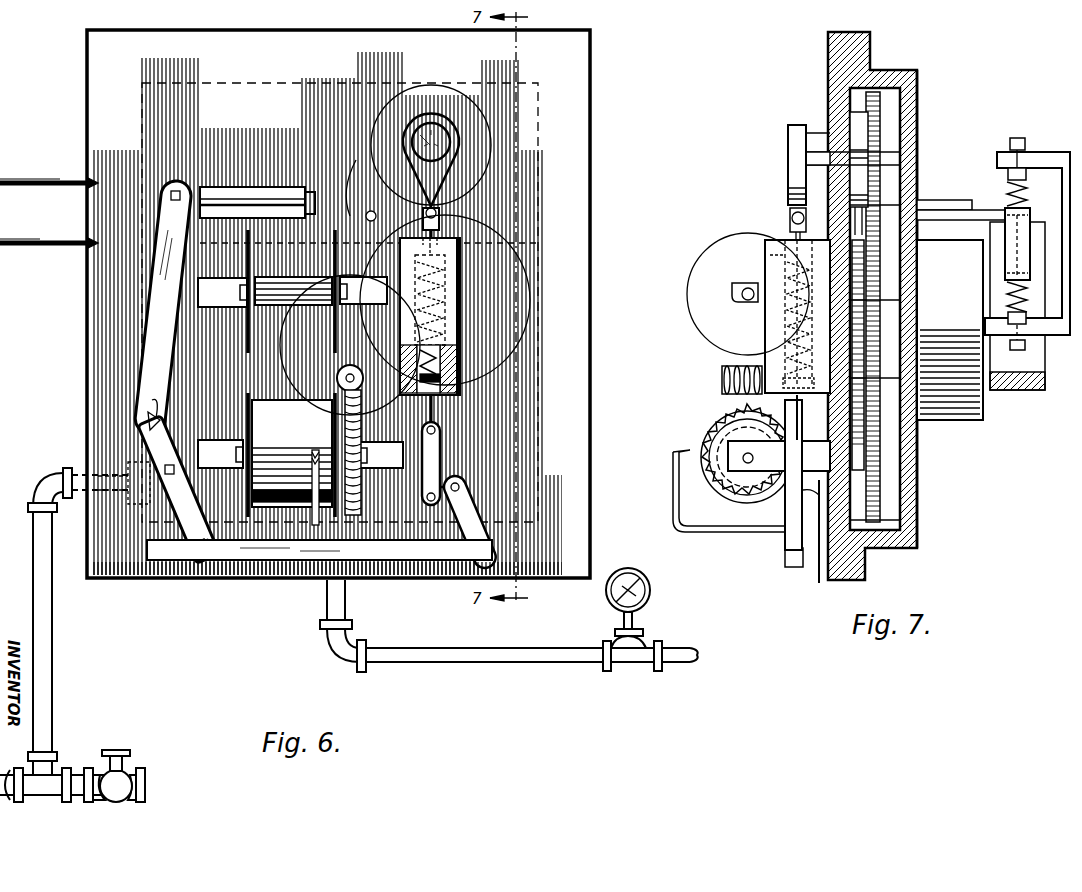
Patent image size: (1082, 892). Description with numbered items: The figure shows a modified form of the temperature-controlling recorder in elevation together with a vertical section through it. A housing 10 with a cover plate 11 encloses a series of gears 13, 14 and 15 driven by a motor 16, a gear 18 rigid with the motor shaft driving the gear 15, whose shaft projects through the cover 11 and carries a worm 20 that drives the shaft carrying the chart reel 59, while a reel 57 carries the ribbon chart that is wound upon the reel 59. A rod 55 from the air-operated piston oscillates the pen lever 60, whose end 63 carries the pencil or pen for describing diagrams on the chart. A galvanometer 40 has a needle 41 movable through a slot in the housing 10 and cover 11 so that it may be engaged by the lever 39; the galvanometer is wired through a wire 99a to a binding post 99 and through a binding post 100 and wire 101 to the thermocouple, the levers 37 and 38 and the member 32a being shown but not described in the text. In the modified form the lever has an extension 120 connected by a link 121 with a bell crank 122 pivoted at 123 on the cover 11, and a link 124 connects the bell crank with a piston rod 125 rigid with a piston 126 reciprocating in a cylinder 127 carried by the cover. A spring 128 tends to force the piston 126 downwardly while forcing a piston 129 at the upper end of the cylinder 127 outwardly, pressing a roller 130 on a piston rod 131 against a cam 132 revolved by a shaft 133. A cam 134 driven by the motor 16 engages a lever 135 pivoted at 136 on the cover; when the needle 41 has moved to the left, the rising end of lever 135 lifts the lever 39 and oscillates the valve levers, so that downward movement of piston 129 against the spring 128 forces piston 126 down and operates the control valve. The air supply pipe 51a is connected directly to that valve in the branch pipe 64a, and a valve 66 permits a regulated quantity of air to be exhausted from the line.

In FIG. 7, the housing 10 is at (918, 110).
In FIG. 6, the cover plate 11 is at (590, 322).
In FIG. 7, the gear 13 is at (882, 390).
In FIG. 7, the gear 14 is at (880, 80).
In FIG. 7, the gear 15 is at (858, 462).
In FIG. 7, the motor 16 is at (950, 420).
In FIG. 7, the gear 18 is at (920, 252).
In FIG. 7, the worm 20 is at (720, 378).
In FIG. 6, the pipe connection 32a is at (140, 462).
In FIG. 6, the lever 37 is at (150, 350).
In FIG. 6, the lever arm 38 is at (162, 522).
In FIG. 6, the lever 39 is at (222, 198).
In FIG. 7, the galvanometer 40 is at (1010, 260).
In FIG. 6, the needle 41 is at (295, 196).
In FIG. 7, the needle 41 is at (928, 202).
In FIG. 6, the air supply pipe 51a is at (475, 660).
In FIG. 6, the rod 55 is at (22, 770).
In FIG. 6, the reel 57 is at (280, 283).
In FIG. 7, the reel 57 is at (700, 330).
In FIG. 6, the reel 59 is at (291, 455).
In FIG. 7, the lever 60 is at (748, 530).
In FIG. 7, the pen end of lever 63 is at (676, 458).
In FIG. 6, the branch pipe 64a is at (45, 662).
In FIG. 6, the valve 66 is at (120, 775).
In FIG. 6, the binding post 99 is at (95, 186).
In FIG. 6, the wire 99a is at (14, 180).
In FIG. 7, the wire 99a is at (1032, 158).
In FIG. 6, the binding post 100 is at (96, 248).
In FIG. 6, the wire 101 is at (20, 246).
In FIG. 7, the wire 101 is at (1025, 322).
In FIG. 6, the extension 120 is at (190, 570).
In FIG. 6, the link 121 is at (278, 568).
In FIG. 7, the link 121 is at (712, 520).
In FIG. 6, the bell crank 122 is at (475, 512).
In FIG. 7, the bell crank 122 is at (819, 583).
In FIG. 6, the pivot 123 is at (455, 485).
In FIG. 6, the link 124 is at (440, 448).
In FIG. 7, the link 124 is at (785, 515).
In FIG. 6, the piston rod 125 is at (435, 412).
In FIG. 6, the piston 126 is at (430, 372).
In FIG. 6, the cylinder 127 is at (445, 315).
In FIG. 7, the cylinder 127 is at (780, 315).
In FIG. 6, the spring 128 is at (465, 265).
In FIG. 7, the spring 128 is at (790, 270).
In FIG. 6, the piston 129 is at (460, 248).
In FIG. 6, the roller 130 is at (440, 210).
In FIG. 7, the roller 130 is at (792, 208).
In FIG. 6, the piston rod 131 is at (440, 230).
In FIG. 6, the cam 132 is at (450, 170).
In FIG. 7, the cam 132 is at (788, 157).
In FIG. 6, the shaft 133 is at (440, 145).
In FIG. 7, the cam 134 is at (858, 122).
In FIG. 6, the lever 135 is at (318, 236).
In FIG. 6, the pivot 136 is at (356, 160).